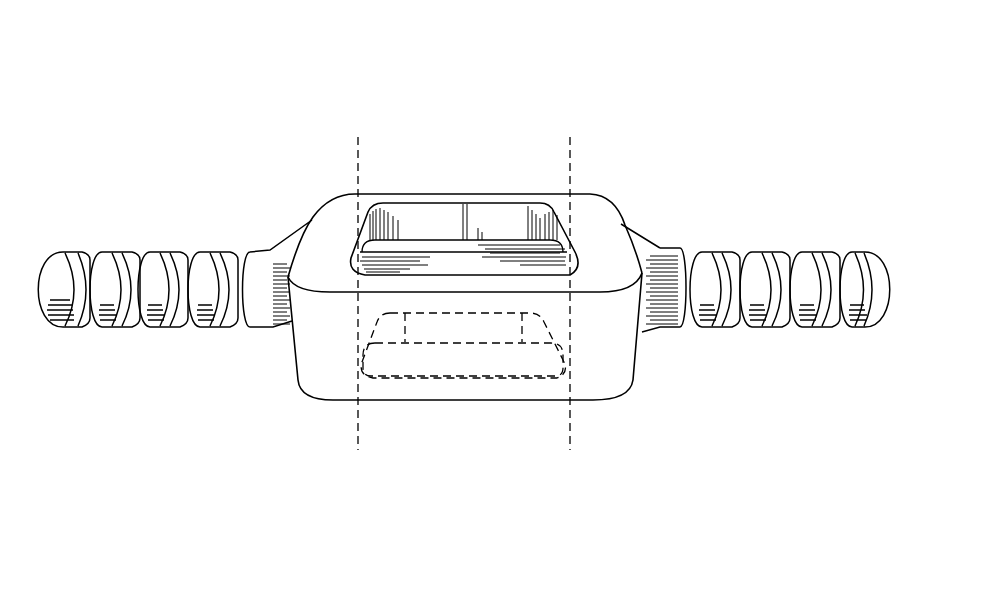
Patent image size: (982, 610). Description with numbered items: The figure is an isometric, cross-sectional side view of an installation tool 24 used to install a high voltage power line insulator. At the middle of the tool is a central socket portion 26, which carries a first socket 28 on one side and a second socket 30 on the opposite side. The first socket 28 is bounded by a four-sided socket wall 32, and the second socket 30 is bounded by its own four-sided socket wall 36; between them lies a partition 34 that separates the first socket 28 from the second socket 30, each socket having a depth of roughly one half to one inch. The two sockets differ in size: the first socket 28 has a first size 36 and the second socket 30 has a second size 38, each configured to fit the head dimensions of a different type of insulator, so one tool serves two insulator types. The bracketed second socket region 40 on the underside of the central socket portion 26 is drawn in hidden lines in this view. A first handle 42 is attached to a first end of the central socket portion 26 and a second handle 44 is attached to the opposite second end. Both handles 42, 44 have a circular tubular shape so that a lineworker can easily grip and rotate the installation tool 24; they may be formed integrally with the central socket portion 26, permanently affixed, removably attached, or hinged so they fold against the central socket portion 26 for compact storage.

The installation tool 24 is at (183, 44).
The central socket portion 26 is at (598, 247).
The first socket 28 is at (503, 230).
The second socket 30 is at (505, 357).
The four-sided socket wall 32 is at (457, 222).
The partition 34 is at (418, 252).
The four-sided socket wall 36 is at (423, 327).
The second size 38 is at (358, 137).
The second end portion 40 is at (358, 450).
The first handle 42 is at (772, 265).
The second handle 44 is at (157, 268).